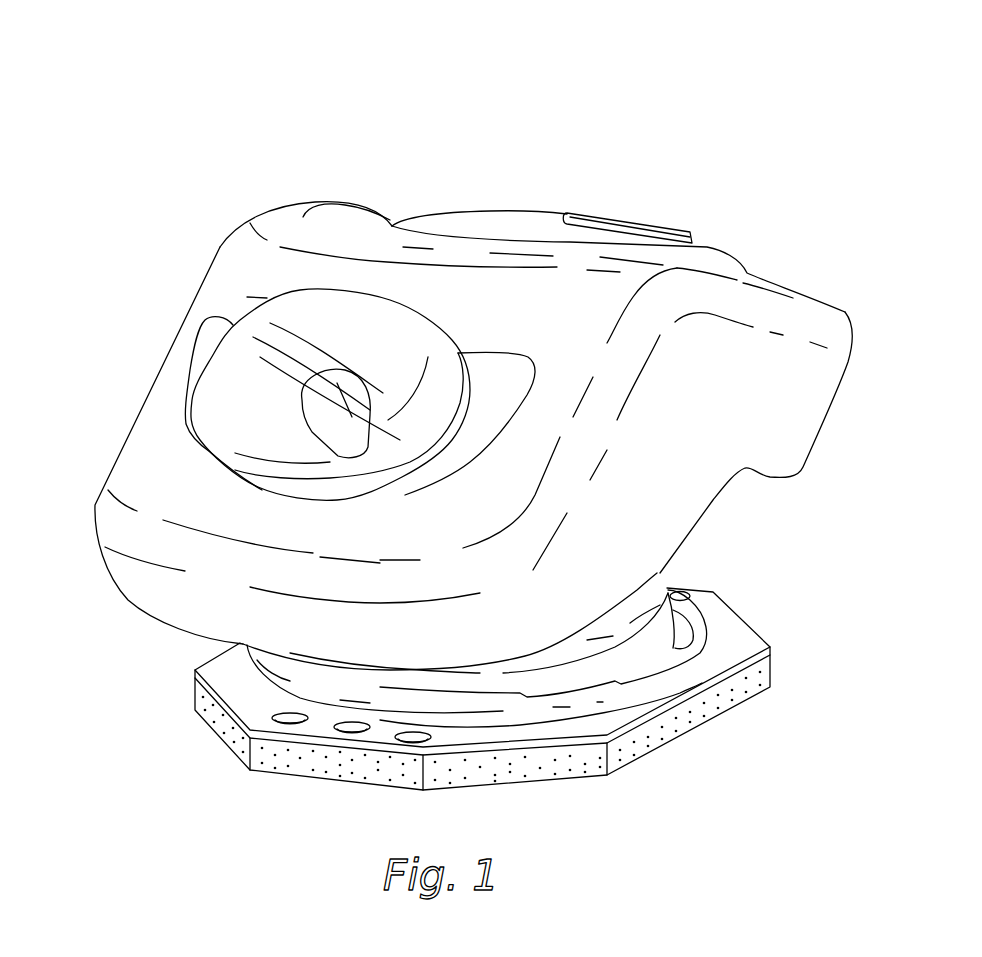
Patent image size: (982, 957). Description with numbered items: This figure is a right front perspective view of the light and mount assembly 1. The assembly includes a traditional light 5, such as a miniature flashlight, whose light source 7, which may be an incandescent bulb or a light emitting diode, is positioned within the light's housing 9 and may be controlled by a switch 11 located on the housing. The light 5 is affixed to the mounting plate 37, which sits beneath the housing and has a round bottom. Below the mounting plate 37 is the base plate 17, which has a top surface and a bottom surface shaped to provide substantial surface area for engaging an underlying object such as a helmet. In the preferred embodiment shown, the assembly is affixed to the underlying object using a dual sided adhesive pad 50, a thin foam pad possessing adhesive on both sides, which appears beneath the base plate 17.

The light and mount assembly 1 is at (103, 88).
The light 5 is at (223, 262).
The light source 7 is at (323, 318).
The housing 9 is at (827, 334).
The switch 11 is at (623, 221).
The base plate 17 is at (727, 641).
The mounting plate 37 is at (669, 584).
The dual sided adhesive pad 50 is at (650, 734).